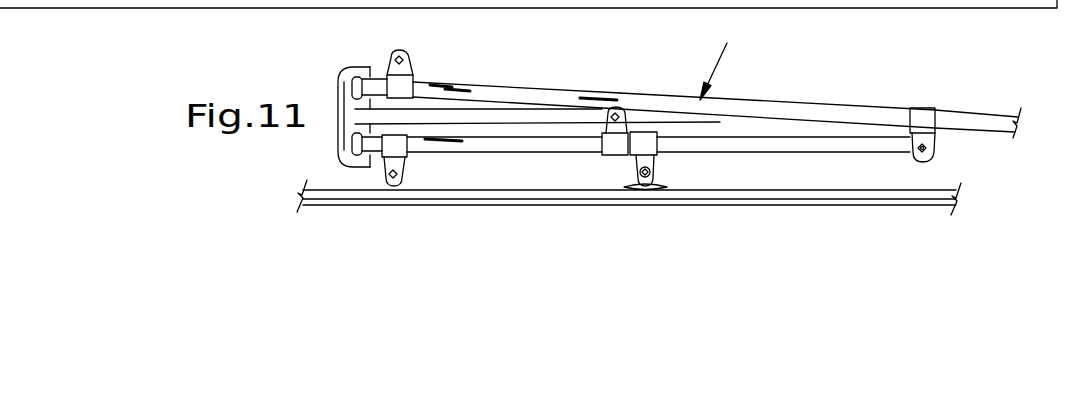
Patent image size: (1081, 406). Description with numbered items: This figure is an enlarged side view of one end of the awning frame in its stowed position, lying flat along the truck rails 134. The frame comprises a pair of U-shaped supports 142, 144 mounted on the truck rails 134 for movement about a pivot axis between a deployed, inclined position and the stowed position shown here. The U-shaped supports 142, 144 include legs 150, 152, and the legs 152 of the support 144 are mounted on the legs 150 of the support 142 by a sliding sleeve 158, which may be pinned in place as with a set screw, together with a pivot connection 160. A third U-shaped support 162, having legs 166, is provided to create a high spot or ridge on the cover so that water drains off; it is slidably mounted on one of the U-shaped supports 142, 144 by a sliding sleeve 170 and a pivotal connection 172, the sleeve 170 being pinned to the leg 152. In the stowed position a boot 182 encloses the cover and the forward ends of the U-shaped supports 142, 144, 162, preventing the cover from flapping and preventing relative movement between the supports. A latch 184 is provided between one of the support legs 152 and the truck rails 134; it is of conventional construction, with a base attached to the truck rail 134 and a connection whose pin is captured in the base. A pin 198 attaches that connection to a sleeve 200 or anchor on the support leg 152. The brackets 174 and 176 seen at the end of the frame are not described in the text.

The truck rails 134 is at (918, 185).
The U-shaped support 142 is at (723, 44).
The U-shaped support 144 is at (864, 163).
The legs 150 is at (795, 78).
The legs 152 is at (534, 152).
The sliding sleeve 158 is at (925, 111).
The pivot connection 160 is at (931, 145).
The third U-shaped support 162 is at (484, 130).
The legs 166 is at (470, 114).
The sliding sleeve 170 is at (616, 153).
The pivotal connection 172 is at (623, 109).
The upper mounting bracket 174 is at (407, 80).
The lower mounting bracket 176 is at (383, 160).
The boot 182 is at (347, 70).
The latch 184 is at (661, 183).
The pin 198 is at (657, 142).
The sleeve 200 is at (645, 182).